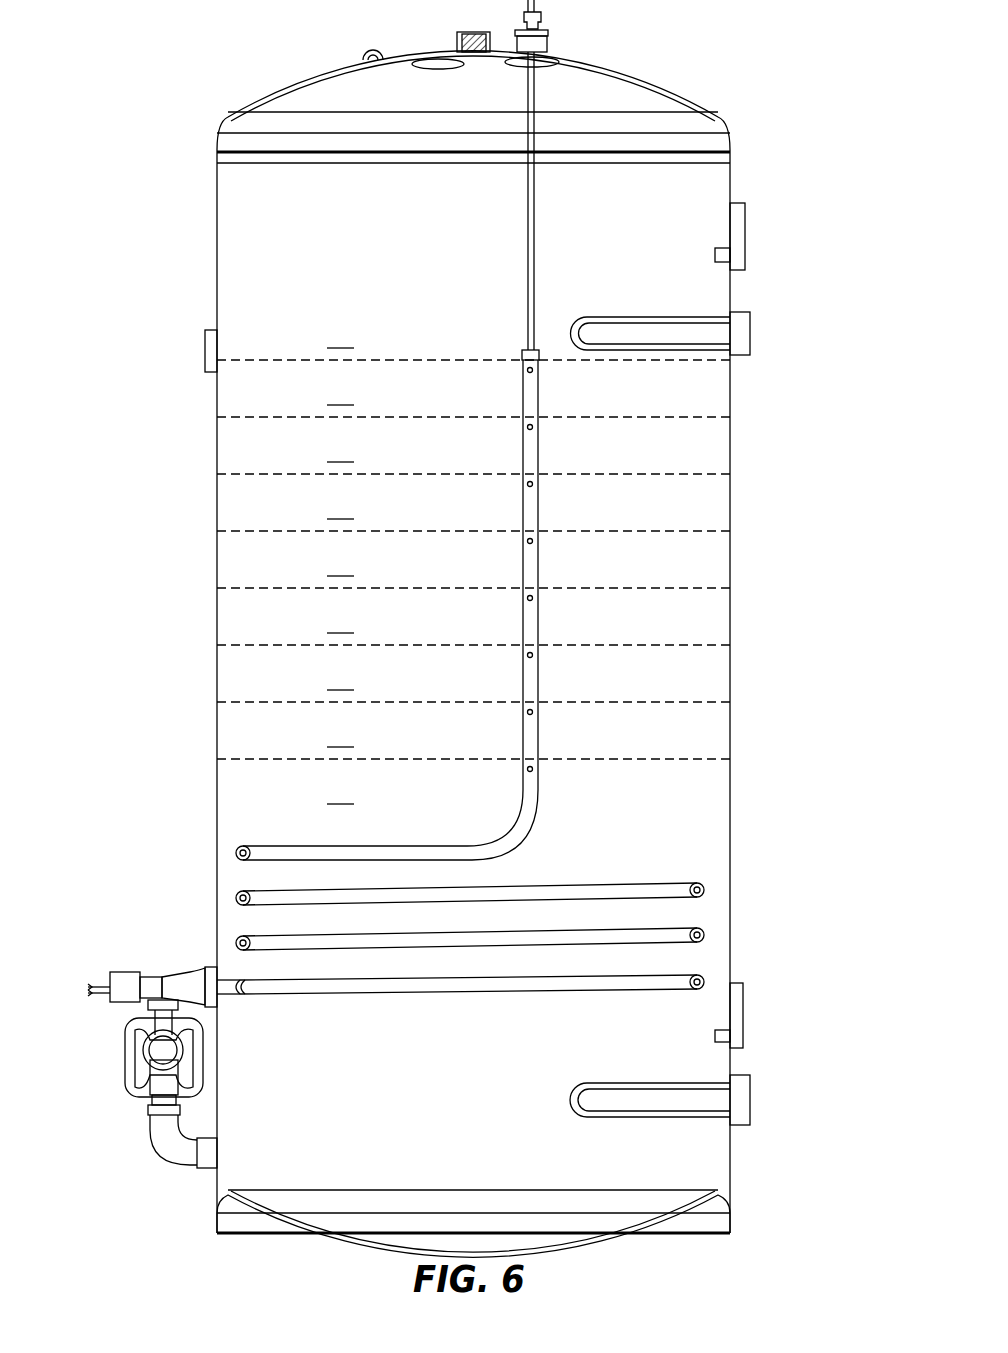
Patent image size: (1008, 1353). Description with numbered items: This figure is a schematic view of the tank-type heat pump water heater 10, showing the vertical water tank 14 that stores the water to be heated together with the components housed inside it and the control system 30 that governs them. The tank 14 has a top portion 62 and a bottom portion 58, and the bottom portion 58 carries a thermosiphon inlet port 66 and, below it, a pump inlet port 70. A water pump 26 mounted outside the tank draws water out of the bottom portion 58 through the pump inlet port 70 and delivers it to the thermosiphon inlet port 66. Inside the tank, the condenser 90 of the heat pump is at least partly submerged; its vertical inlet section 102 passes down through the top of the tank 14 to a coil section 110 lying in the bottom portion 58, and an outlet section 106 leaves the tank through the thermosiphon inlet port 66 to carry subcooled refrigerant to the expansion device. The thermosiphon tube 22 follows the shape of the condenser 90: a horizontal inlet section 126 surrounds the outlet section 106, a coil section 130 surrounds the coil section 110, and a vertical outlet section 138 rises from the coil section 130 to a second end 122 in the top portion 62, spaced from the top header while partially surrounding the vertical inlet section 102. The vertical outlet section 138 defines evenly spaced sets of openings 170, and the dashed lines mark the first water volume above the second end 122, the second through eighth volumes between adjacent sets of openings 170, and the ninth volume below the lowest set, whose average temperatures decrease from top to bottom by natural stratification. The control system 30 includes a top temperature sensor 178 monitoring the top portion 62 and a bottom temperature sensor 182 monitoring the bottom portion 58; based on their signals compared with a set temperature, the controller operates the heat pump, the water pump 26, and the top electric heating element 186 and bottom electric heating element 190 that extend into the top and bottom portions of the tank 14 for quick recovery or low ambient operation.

The water heater 10 is at (719, 43).
The water tank 14 is at (165, 157).
The thermosiphon tube 22 is at (515, 822).
The water pump 26 is at (125, 1055).
The control system 30 is at (828, 237).
The bottom portion 58 is at (178, 862).
The top portion 62 is at (185, 292).
The thermosiphon inlet port 66 is at (220, 1002).
The pump inlet port 70 is at (203, 1169).
The condenser 90 is at (534, 205).
The vertical inlet section 102 is at (534, 275).
The outlet section 106 is at (99, 984).
The coil section 110 is at (700, 884).
The second end 122 is at (527, 350).
The horizontal inlet section 126 is at (242, 997).
The coil section 130 is at (303, 845).
The vertical outlet section 138 is at (540, 545).
The openings 170 is at (526, 372).
The top temperature sensor 178 is at (745, 224).
The bottom temperature sensor 182 is at (746, 1010).
The top electric heating element 186 is at (750, 333).
The bottom electric heating element 190 is at (750, 1100).